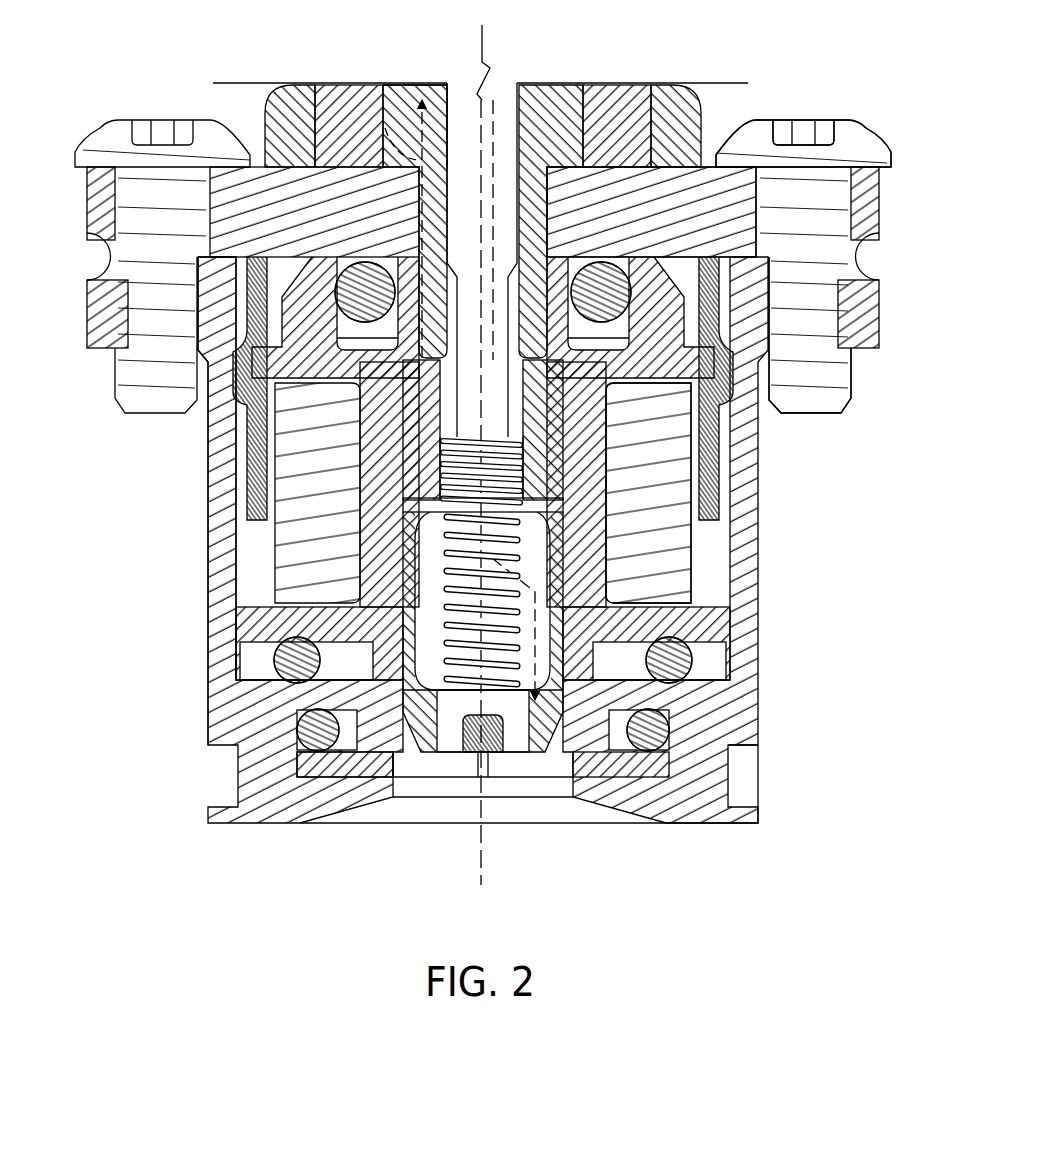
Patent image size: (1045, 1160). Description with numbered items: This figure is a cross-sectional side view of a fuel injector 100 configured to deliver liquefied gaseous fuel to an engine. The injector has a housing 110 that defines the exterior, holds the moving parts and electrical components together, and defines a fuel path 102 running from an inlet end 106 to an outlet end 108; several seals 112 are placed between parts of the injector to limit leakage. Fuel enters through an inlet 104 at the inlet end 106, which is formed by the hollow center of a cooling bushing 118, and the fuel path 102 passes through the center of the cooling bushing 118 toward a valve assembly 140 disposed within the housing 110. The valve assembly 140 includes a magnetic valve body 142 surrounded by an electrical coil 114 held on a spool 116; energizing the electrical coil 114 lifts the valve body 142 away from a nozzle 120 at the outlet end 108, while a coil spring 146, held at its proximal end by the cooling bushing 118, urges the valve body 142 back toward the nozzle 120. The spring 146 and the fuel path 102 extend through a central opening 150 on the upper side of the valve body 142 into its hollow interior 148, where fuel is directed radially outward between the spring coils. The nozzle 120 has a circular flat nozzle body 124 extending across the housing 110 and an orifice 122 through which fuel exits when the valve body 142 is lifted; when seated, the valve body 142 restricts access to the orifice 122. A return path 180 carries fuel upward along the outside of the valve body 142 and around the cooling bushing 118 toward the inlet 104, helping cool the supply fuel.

The fuel injector 100 is at (813, 842).
The fuel path 102 is at (507, 108).
The inlet 104 is at (450, 100).
The inlet end 106 is at (707, 120).
The outlet end 108 is at (762, 787).
The housing 110 is at (218, 675).
The seals 112 is at (601, 292).
The electrical coil 114 is at (657, 430).
The spool 116 is at (597, 352).
The cooling bushing 118 is at (530, 138).
The nozzle 120 is at (612, 781).
The orifice 122 is at (477, 781).
The nozzle body 124 is at (347, 765).
The valve assembly 140 is at (582, 570).
The valve body 142 is at (510, 727).
The spring 146 is at (523, 472).
The hollow interior 148 is at (542, 618).
The central opening 150 is at (432, 490).
The return path 180 is at (397, 157).